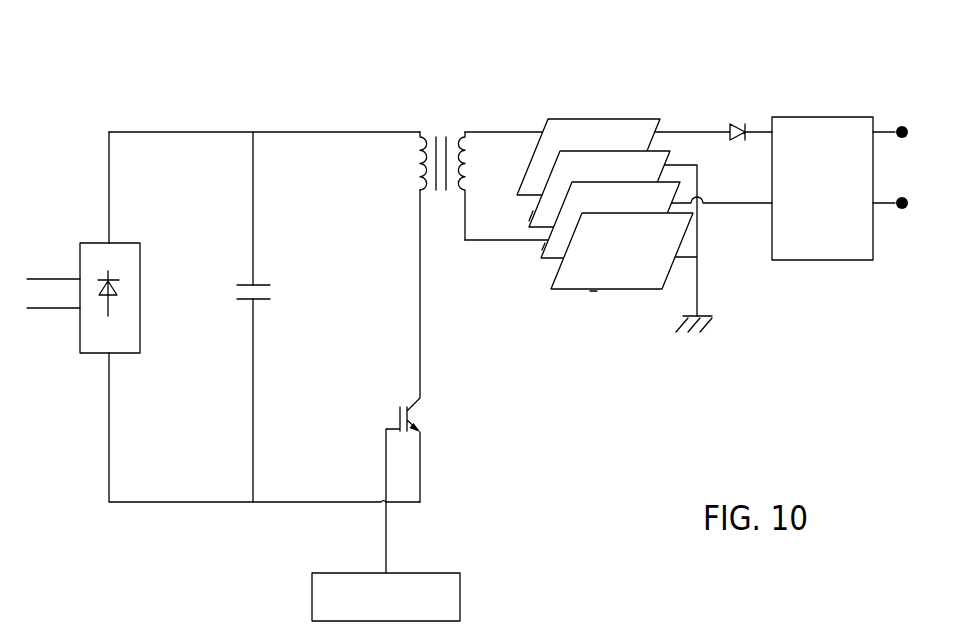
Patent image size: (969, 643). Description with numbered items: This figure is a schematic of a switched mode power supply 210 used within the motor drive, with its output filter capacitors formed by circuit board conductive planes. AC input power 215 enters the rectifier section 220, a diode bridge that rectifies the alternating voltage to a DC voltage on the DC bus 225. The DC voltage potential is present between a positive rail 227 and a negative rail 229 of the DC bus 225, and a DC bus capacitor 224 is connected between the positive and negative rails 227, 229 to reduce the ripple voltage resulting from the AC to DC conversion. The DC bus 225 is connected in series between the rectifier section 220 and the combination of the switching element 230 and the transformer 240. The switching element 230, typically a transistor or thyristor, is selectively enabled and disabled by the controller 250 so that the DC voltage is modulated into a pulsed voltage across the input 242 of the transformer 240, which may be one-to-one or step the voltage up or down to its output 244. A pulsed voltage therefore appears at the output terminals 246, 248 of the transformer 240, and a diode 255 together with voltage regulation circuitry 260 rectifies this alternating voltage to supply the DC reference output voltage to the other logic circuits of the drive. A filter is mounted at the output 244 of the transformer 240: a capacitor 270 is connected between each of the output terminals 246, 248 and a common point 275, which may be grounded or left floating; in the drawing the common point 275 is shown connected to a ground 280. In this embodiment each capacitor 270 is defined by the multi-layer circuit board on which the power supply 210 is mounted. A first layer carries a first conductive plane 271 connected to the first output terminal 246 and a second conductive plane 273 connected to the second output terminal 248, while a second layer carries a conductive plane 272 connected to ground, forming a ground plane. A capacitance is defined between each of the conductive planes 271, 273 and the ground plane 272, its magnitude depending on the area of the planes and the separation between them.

The switched mode power supply 210 is at (76, 121).
The AC input power 215 is at (36, 252).
The rectifier section 220 is at (120, 354).
The DC bus capacitor 224 is at (280, 312).
The DC bus 225 is at (163, 122).
The positive rail 227 is at (253, 131).
The negative rail 229 is at (174, 500).
The switching element 230 is at (432, 423).
The transformer 240 is at (440, 104).
The input 242 is at (414, 118).
The output 244 is at (465, 120).
The first output terminal 246 is at (508, 131).
The second output terminal 248 is at (469, 241).
The controller 250 is at (460, 607).
The diode 255 is at (737, 106).
The voltage regulation circuitry 260 is at (812, 106).
The capacitor 270 is at (594, 110).
The first conductive plane 271 is at (635, 119).
The ground plane 272 is at (533, 211).
The second conductive plane 273 is at (542, 250).
The common point 275 is at (710, 292).
The ground 280 is at (724, 325).